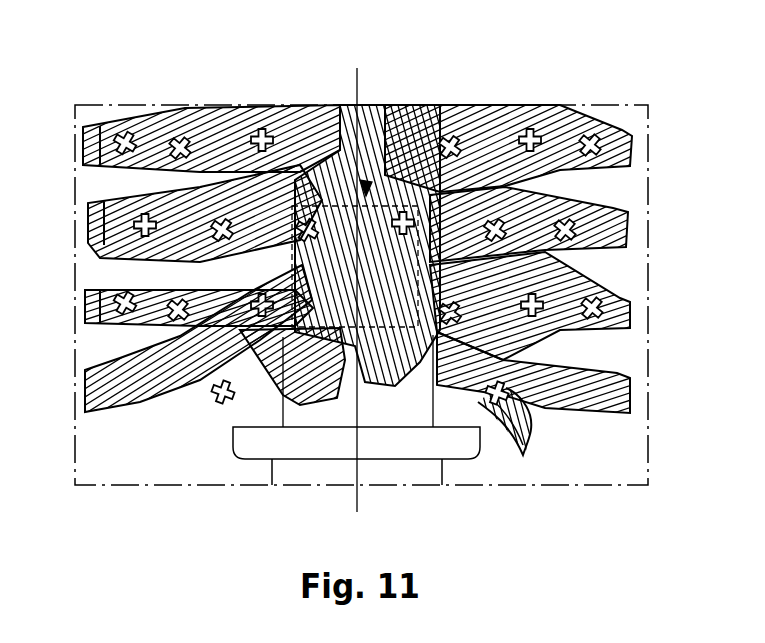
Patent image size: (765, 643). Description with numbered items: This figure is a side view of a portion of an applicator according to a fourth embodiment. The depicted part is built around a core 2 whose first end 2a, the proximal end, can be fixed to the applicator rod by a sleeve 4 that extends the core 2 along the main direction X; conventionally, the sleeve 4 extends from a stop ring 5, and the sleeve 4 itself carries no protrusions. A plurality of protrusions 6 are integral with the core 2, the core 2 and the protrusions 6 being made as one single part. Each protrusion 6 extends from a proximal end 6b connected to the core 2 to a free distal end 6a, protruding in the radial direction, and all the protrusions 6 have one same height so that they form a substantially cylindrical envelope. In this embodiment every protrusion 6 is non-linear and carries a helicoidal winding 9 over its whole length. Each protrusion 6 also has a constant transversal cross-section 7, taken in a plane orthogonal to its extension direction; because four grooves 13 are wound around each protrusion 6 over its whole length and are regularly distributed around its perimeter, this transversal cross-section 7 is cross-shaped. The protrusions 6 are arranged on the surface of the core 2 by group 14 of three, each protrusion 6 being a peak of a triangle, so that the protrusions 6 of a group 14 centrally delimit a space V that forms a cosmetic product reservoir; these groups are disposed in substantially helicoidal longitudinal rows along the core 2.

The core 2 is at (308, 120).
The first end 2a is at (368, 420).
The sleeve 4 is at (323, 472).
The stop ring 5 is at (410, 445).
The protrusions 6 is at (130, 212).
The free distal end 6a is at (217, 392).
The proximal end 6b is at (337, 363).
The transversal cross-section 7 is at (592, 298).
The helicoidal winding 9 is at (130, 280).
The grooves 13 is at (382, 321).
The group 14 is at (368, 182).
The main direction X is at (357, 86).
The space V is at (443, 230).